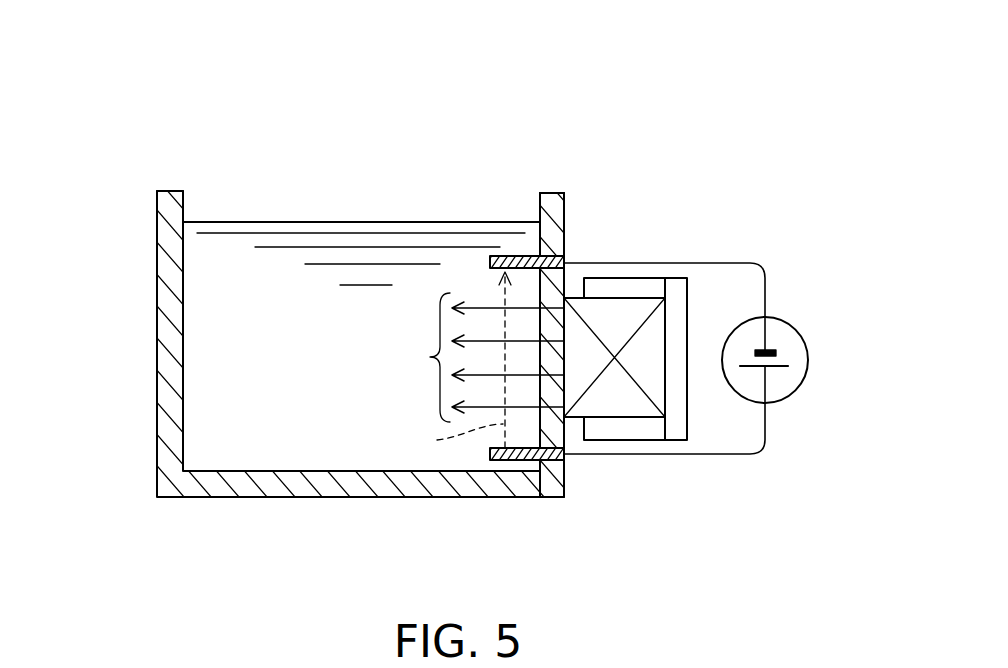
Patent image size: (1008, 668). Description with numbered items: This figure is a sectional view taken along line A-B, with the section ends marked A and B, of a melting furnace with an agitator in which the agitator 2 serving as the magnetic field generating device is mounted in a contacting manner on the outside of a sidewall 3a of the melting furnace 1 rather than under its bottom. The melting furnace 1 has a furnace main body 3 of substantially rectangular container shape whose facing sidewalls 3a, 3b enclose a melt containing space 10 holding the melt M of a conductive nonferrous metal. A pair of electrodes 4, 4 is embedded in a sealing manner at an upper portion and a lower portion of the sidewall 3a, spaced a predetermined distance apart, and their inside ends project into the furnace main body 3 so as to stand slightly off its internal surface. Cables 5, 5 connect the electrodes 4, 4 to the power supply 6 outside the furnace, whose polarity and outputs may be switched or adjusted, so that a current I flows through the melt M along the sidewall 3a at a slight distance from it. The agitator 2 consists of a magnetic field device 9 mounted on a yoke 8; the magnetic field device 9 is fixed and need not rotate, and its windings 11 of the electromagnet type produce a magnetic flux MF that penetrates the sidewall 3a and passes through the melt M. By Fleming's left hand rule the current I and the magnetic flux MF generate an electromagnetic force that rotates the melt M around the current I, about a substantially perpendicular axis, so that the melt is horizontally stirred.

The melting furnace 1 is at (471, 124).
The agitator 2 is at (716, 292).
The furnace main body 3 is at (566, 231).
The sidewall 3a is at (555, 205).
The sidewall 3b is at (168, 222).
The electrode 4 is at (515, 256).
The cable 5 is at (714, 263).
The power supply 6 is at (787, 320).
The yoke 8 is at (676, 412).
The magnetic field device 9 is at (604, 317).
The melt containing space 10 is at (187, 350).
The coil 11 is at (643, 292).
The melt M is at (285, 240).
The magnetic flux MF is at (476, 357).
The current I is at (469, 365).
The line A-B A is at (56, 355).
The line A- B is at (857, 361).